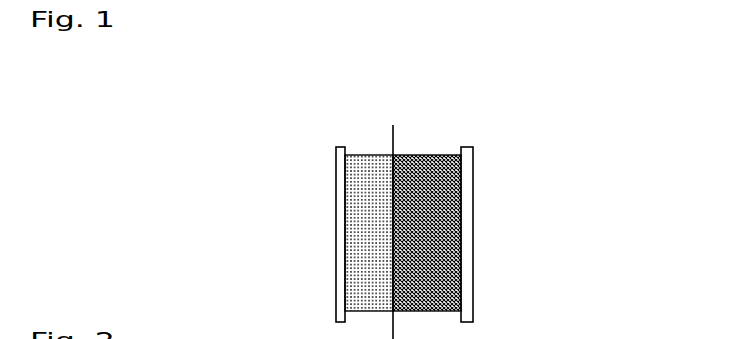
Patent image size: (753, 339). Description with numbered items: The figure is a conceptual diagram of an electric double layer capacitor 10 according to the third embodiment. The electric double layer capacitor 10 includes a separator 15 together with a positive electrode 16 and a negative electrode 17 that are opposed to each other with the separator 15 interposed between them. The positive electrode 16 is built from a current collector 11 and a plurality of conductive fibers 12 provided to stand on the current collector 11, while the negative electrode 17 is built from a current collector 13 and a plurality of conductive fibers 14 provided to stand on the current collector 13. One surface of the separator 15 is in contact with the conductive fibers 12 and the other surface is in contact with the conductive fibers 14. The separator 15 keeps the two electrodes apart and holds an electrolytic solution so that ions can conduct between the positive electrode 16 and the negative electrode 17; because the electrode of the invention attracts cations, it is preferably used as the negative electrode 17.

The electric double layer capacitor 10 is at (309, 72).
The current collector 11 is at (470, 175).
The conductive fibers 12 is at (433, 233).
The current collector 13 is at (335, 175).
The conductive fibers 14 is at (358, 245).
The separator 15 is at (402, 119).
The positive electrode 16 is at (592, 120).
The negative electrode 17 is at (208, 115).